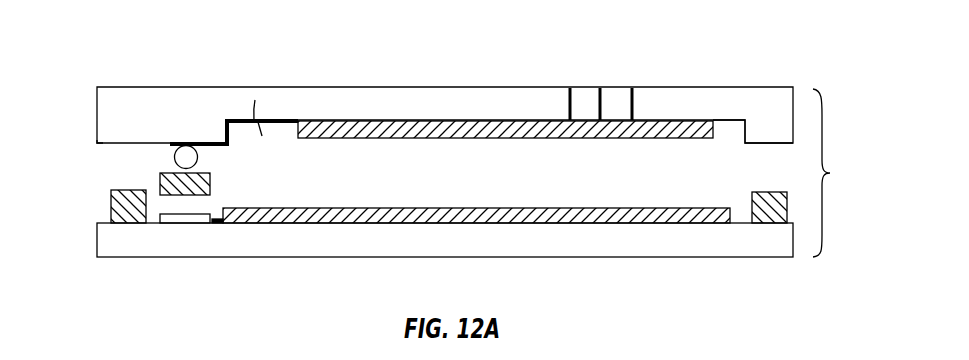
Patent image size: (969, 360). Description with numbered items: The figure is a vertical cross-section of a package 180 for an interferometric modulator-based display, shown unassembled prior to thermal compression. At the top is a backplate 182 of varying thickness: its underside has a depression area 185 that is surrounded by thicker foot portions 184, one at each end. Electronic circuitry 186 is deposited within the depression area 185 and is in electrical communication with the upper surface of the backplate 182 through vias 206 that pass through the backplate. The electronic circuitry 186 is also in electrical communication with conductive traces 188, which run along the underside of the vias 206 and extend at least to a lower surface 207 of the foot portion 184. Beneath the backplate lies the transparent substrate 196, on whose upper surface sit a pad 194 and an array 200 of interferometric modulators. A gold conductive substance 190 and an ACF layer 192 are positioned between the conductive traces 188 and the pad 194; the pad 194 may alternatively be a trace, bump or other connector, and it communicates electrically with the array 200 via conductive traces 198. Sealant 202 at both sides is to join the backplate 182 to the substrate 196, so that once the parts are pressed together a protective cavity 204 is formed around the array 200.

The package 180 is at (845, 173).
The backplate 182 is at (254, 100).
The foot portion 184 is at (163, 133).
The depression area 185 is at (261, 137).
The electronic circuitry 186 is at (427, 127).
The conductive traces 188 is at (279, 121).
The gold conductive substance 190 is at (165, 155).
The ACF layer 192 is at (213, 187).
The pad 194 is at (190, 223).
The transparent substrate 196 is at (525, 238).
The conductive traces 198 is at (216, 223).
The array of interferometric modulators 200 is at (382, 217).
The sealant 202 is at (125, 222).
The protective cavity 204 is at (640, 164).
The vias 206 is at (633, 100).
The lower surface 207 is at (103, 144).